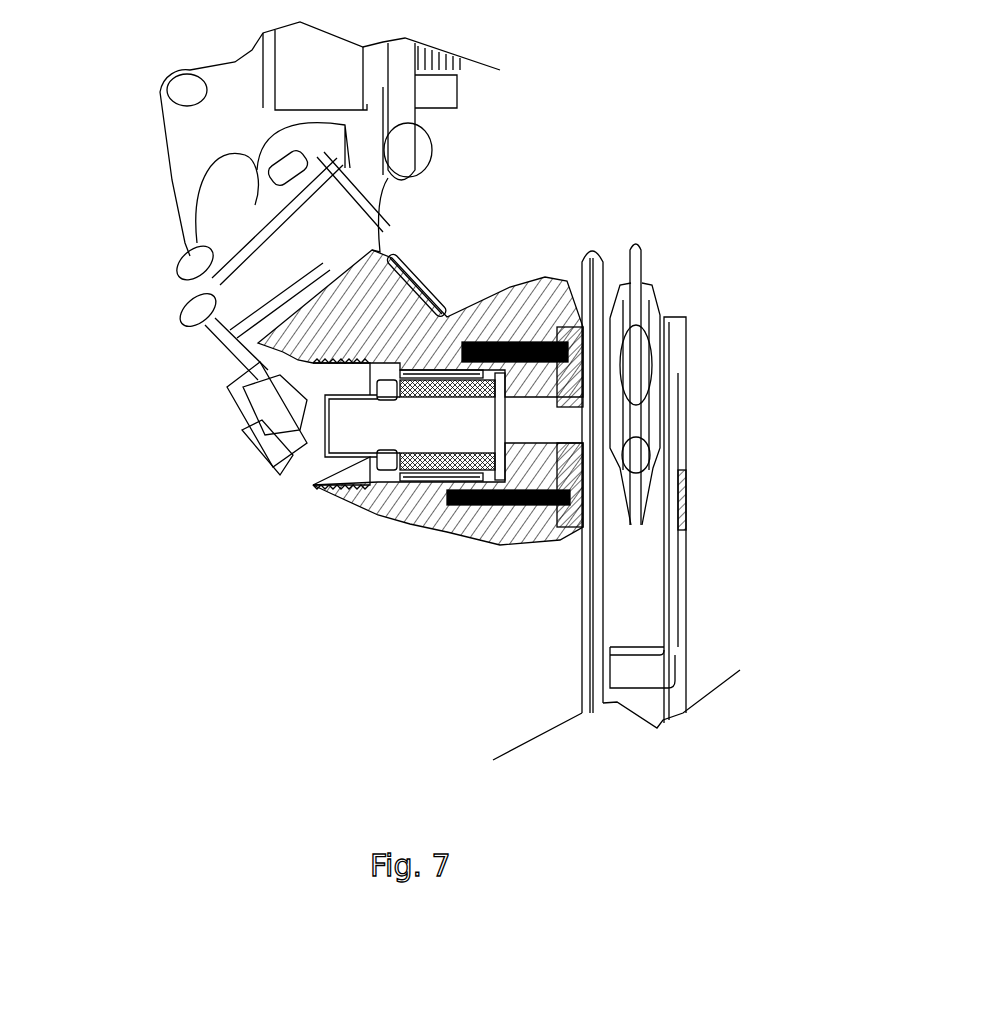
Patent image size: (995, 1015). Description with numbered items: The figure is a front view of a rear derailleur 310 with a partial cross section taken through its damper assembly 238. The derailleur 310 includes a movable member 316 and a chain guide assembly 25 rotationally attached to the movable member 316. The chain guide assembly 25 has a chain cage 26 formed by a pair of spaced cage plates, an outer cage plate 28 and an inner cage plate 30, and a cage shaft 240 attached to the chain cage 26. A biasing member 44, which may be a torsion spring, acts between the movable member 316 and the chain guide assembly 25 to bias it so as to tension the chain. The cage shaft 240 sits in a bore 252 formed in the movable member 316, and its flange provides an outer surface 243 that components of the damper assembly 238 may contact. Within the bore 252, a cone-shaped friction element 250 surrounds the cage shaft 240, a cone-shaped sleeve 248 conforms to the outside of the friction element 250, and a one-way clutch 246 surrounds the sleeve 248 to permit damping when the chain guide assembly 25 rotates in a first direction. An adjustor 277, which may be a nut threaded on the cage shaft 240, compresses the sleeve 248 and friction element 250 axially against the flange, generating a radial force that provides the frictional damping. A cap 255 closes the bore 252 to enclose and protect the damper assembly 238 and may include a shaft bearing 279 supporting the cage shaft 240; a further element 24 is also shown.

The movable member 316 is at (345, 318).
The bore 252 is at (428, 310).
The friction element 250 is at (418, 380).
The derailleur 310 is at (549, 199).
The biasing member 44 is at (537, 323).
The outer surface 243 is at (487, 417).
The ring 24 is at (498, 427).
The chain guide assembly 25 is at (731, 415).
The inner cage plate 30 is at (680, 528).
The chain cage 26 is at (660, 667).
The outer cage plate 28 is at (580, 668).
The damper assembly 238 is at (445, 493).
The one-way clutch 246 is at (453, 472).
The sleeve 248 is at (415, 478).
The adjustor 277 is at (380, 470).
The shaft bearing 279 is at (330, 478).
The cage shaft 240 is at (345, 428).
The cap 255 is at (302, 432).